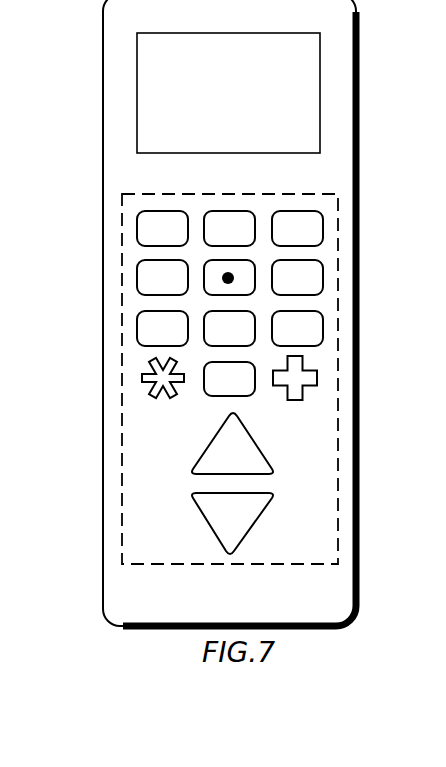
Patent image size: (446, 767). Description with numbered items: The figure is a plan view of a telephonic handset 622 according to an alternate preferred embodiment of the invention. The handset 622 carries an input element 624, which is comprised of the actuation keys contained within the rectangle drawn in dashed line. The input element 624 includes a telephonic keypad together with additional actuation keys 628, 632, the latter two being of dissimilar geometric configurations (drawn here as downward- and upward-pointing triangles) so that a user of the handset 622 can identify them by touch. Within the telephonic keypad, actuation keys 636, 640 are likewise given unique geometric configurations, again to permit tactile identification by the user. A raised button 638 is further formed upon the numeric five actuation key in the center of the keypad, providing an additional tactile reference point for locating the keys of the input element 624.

The handset 622 is at (400, 310).
The input element 624 is at (143, 192).
The raised button 638 is at (226, 278).
The actuation key 636 is at (158, 394).
The actuation key 640 is at (317, 394).
The actuation key 632 is at (268, 450).
The actuation key 628 is at (212, 533).